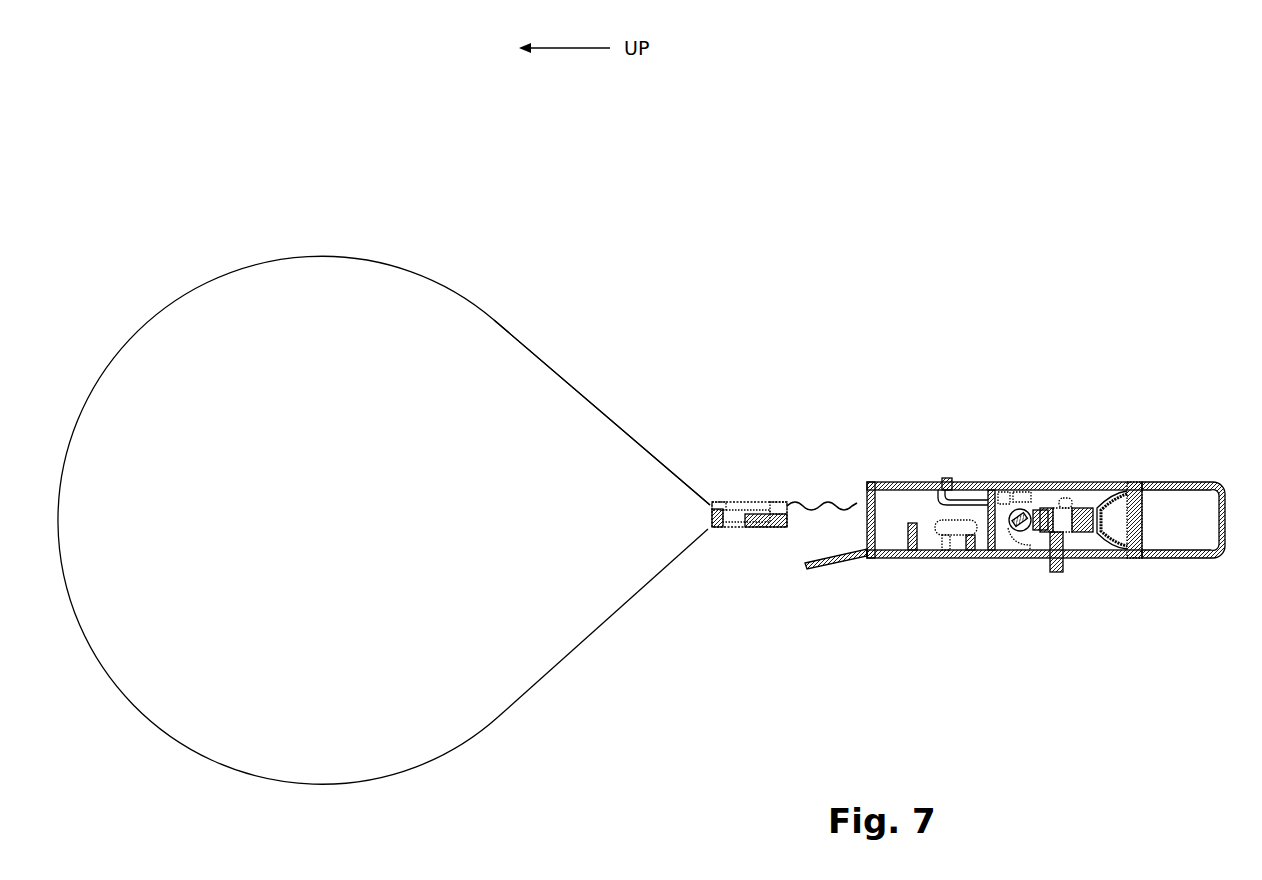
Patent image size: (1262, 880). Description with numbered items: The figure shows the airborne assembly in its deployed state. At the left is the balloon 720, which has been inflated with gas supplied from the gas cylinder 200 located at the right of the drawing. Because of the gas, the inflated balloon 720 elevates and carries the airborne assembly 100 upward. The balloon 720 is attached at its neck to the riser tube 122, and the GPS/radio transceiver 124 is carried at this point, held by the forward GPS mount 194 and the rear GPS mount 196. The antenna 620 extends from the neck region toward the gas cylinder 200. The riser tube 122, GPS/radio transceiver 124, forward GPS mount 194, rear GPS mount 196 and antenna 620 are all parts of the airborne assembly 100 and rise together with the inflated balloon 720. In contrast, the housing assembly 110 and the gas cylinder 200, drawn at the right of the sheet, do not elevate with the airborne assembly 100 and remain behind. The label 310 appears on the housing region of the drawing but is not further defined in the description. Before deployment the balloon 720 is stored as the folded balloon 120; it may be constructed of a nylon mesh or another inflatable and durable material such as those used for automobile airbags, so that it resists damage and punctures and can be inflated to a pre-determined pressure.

The airborne assembly 100 is at (670, 619).
The housing assembly 110 is at (1072, 553).
The folded balloon 120 is at (772, 528).
The riser tube 122 is at (727, 528).
The GPS/radio transceiver 124 is at (723, 499).
The forward GPS mount 194 is at (715, 500).
The rear GPS mount 196 is at (775, 500).
The gas cylinder 200 is at (1167, 488).
The housing 310 is at (833, 556).
The antenna 620 is at (825, 500).
The balloon 720 is at (317, 255).